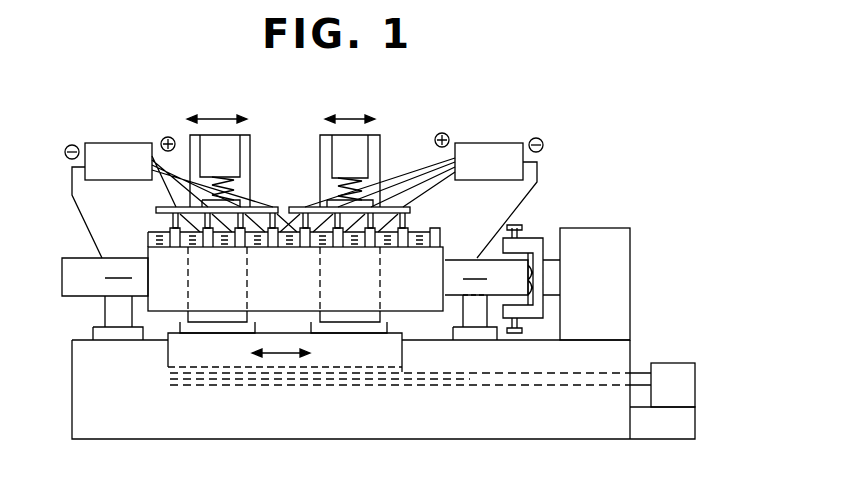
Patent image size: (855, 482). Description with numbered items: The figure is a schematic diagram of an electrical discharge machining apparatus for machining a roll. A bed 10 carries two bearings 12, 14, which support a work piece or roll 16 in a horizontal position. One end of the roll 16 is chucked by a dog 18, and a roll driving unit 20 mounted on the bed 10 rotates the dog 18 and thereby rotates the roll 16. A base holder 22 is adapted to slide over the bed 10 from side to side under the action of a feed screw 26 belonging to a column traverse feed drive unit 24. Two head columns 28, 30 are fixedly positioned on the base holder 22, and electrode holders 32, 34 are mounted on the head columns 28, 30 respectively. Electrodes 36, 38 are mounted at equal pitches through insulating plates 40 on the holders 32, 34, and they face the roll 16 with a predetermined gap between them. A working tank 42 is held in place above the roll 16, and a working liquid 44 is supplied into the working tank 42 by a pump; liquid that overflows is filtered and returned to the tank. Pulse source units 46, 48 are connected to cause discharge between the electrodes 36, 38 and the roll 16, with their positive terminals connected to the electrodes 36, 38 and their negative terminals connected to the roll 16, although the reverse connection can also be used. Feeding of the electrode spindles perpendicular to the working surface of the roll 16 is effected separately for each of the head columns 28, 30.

The bed 10 is at (514, 430).
The bearing 12 is at (108, 308).
The bearing 14 is at (480, 313).
The work piece or roll 16 is at (424, 305).
The dog 18 is at (538, 236).
The roll driving unit 20 is at (632, 270).
The base holder 22 is at (171, 360).
The column traverse feed drive unit 24 is at (681, 370).
The feed screw 26 is at (430, 384).
The head column 28 is at (250, 135).
The head column 30 is at (377, 147).
The electrode holder 32 is at (263, 207).
The electrode holder 34 is at (400, 238).
The electrode 36 is at (168, 237).
The electrode 38 is at (440, 228).
The insulating plate 40 is at (285, 215).
The working tank 42 is at (150, 236).
The working liquid 44 is at (431, 247).
The pulse source unit 46 is at (130, 143).
The pulse source unit 48 is at (523, 143).